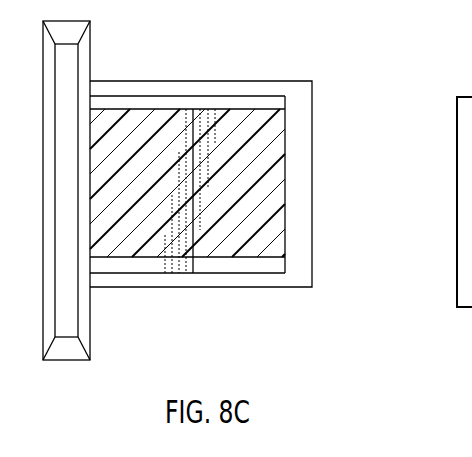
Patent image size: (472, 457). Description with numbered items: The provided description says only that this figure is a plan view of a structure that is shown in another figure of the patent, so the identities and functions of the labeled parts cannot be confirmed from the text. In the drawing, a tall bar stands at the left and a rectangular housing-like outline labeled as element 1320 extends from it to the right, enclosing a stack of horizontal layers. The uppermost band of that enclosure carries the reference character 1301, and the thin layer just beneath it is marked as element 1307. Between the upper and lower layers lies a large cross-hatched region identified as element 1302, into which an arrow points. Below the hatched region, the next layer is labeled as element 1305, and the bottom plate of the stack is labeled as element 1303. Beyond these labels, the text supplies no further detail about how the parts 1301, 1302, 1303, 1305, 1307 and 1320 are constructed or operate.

The upper wall of housing 1301 is at (120, 95).
The core body 1302 is at (255, 181).
The bottom plate 1303 is at (228, 274).
The lower layer 1305 is at (272, 256).
The upper layer 1307 is at (178, 107).
The housing 1320 is at (116, 291).